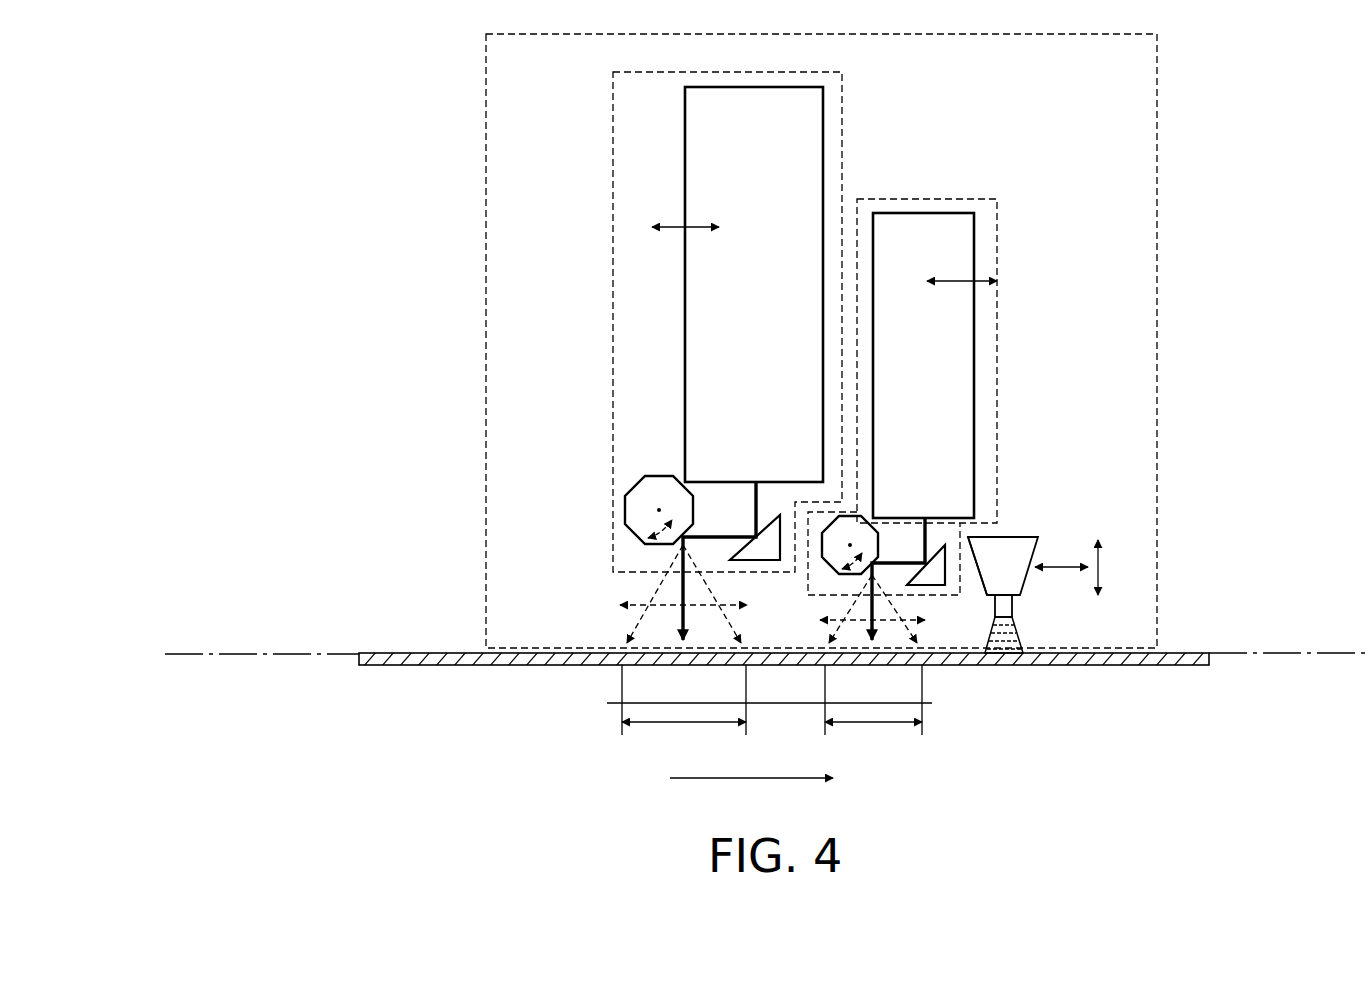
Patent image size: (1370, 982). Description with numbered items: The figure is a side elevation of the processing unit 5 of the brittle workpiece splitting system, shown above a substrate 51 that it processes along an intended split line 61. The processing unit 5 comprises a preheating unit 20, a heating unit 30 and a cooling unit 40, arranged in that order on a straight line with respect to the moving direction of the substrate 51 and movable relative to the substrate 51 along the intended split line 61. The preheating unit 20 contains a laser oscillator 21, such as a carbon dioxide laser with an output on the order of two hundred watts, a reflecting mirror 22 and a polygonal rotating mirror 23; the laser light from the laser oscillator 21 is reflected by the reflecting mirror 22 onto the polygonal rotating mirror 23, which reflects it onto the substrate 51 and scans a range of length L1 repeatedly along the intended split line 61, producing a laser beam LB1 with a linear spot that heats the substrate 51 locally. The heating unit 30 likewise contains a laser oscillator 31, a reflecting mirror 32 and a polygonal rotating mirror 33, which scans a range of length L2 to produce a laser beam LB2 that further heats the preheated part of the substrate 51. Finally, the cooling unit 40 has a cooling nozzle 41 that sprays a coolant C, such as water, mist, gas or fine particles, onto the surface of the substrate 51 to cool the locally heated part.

The processing unit 5 is at (485, 357).
The preheating unit 20 is at (857, 136).
The laser oscillator 21 is at (702, 358).
The reflecting mirror 22 is at (769, 512).
The polygonal rotating mirror 23 is at (659, 476).
The heating unit 30 is at (984, 190).
The laser oscillator 31 is at (970, 338).
The reflecting mirror 32 is at (936, 545).
The polygonal rotating mirror 33 is at (870, 562).
The cooling unit 40 is at (1022, 529).
The cooling nozzle 41 is at (1020, 591).
The coolant C is at (1018, 631).
The laser beam LB1 is at (683, 584).
The laser beam LB2 is at (870, 602).
The substrate 51 is at (410, 650).
The intended split line 61 is at (237, 650).
The scanning range length L1 is at (769, 710).
The scanning range length L2 is at (873, 710).